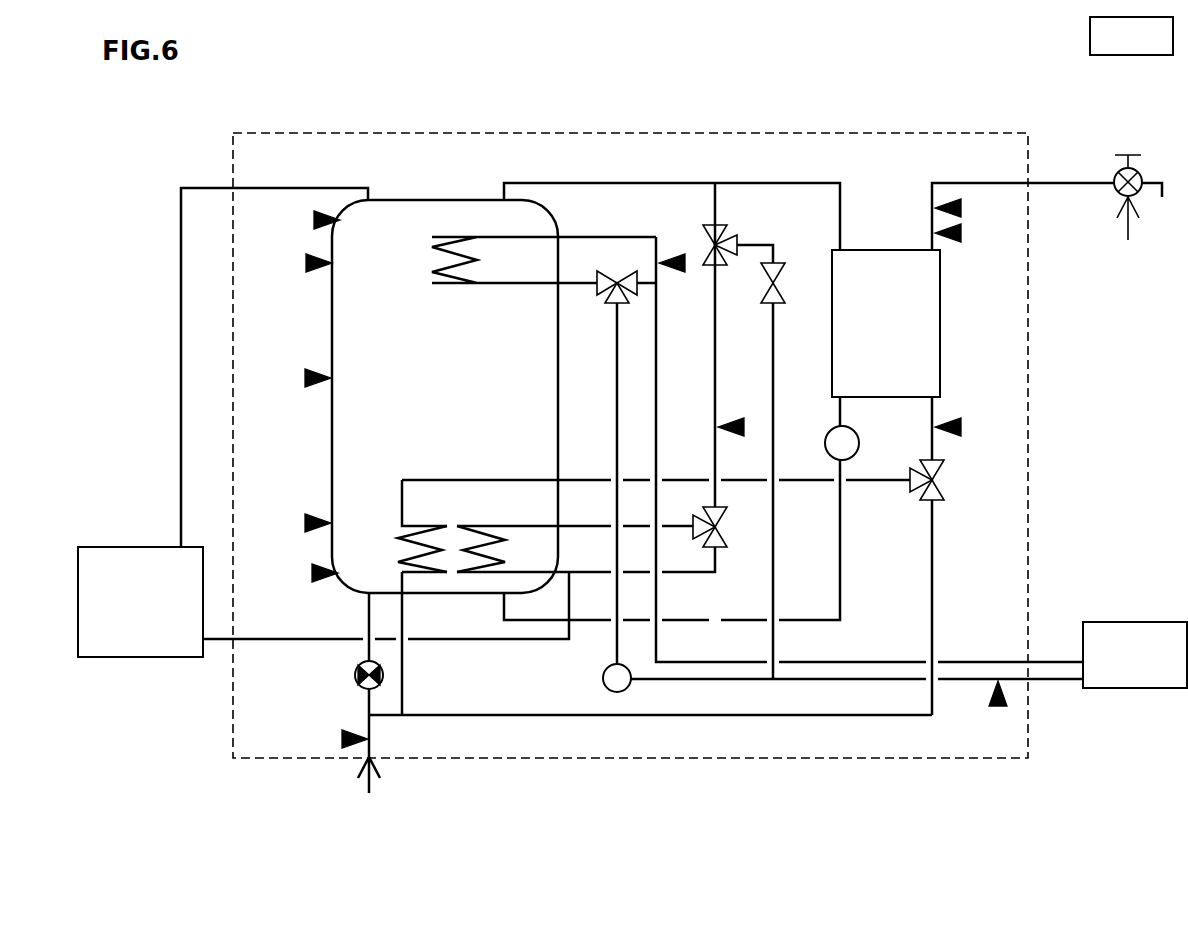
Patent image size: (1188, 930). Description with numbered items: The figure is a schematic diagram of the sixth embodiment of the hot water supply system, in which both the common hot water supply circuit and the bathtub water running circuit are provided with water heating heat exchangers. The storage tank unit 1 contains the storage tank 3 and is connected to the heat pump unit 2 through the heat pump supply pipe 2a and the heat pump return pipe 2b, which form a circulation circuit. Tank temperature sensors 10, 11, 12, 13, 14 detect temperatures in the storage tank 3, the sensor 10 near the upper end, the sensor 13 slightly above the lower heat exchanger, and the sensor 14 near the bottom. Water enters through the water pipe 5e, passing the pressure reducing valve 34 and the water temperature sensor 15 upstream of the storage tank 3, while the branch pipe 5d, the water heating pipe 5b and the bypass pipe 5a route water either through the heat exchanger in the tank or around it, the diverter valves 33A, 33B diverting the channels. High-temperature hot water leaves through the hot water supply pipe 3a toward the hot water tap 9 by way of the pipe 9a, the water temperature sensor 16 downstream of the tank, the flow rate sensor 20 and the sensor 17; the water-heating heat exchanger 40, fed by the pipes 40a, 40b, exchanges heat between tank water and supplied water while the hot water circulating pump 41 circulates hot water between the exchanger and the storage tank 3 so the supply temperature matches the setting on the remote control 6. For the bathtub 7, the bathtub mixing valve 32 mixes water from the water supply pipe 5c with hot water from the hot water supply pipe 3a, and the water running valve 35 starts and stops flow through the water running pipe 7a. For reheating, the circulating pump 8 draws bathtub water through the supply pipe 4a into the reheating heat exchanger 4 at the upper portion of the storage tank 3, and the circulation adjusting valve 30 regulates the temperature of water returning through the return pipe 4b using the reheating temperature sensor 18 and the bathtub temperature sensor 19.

The storage tank unit 1 is at (233, 150).
The heat pump unit 2 is at (142, 547).
The heat pump supply pipe 2a is at (276, 640).
The heat pump return pipe 2b is at (181, 358).
The storage tank 3 is at (332, 325).
The hot water supply pipe 3a is at (624, 183).
The reheating heat exchanger 4 is at (464, 237).
The supply pipe 4a is at (617, 368).
The return pipe 4b is at (656, 368).
The bypass pipe 5a is at (650, 621).
The water heating pipe 5b is at (654, 513).
The water supply pipe 5c is at (731, 345).
The branch pipe 5d is at (505, 640).
The water pipe 5e is at (366, 712).
The remote control 6 is at (1090, 30).
The bathtub 7 is at (1143, 688).
The water running pipe 7a is at (774, 332).
The circulating pump 8 is at (836, 678).
The hot water tap 9 is at (1128, 155).
The hot water supply pipe 9a is at (946, 183).
The tank temperature sensor 10 is at (311, 220).
The tank temperature sensor 11 is at (304, 263).
The tank temperature sensor 12 is at (303, 378).
The tank temperature sensor 13 is at (302, 523).
The tank temperature sensor 14 is at (310, 573).
The water temperature sensor 15 is at (340, 739).
The water temperature sensor 16 is at (855, 416).
The temperature sensor 17 is at (963, 233).
The reheating temperature sensor 18 is at (670, 274).
The bathtub temperature sensor 19 is at (997, 708).
The hot water flow rate sensor 20 is at (963, 208).
The circulation adjusting valve 30 is at (621, 271).
The bathtub mixing valve 32 is at (710, 183).
The diverter valve 33A is at (727, 527).
The diverter valve 33B is at (941, 458).
The pressure reducing valve 34 is at (353, 675).
The water running valve 35 is at (773, 263).
The water-heating heat exchanger 40 is at (940, 322).
The heat exchanger inlet pipe 40a is at (795, 183).
The heat exchanger outlet pipe 40b is at (696, 508).
The hot water circulating pump 41 is at (832, 436).